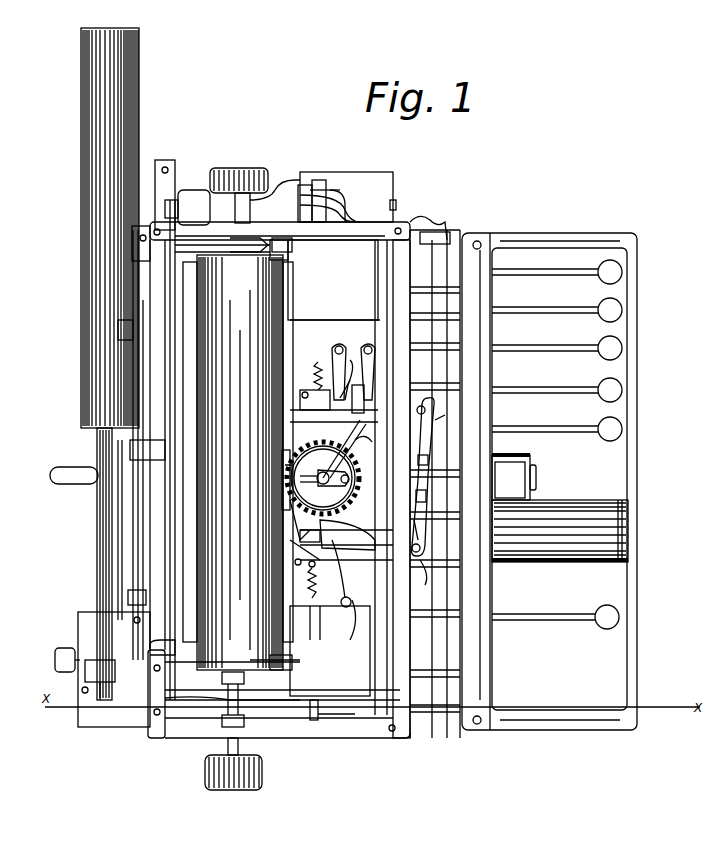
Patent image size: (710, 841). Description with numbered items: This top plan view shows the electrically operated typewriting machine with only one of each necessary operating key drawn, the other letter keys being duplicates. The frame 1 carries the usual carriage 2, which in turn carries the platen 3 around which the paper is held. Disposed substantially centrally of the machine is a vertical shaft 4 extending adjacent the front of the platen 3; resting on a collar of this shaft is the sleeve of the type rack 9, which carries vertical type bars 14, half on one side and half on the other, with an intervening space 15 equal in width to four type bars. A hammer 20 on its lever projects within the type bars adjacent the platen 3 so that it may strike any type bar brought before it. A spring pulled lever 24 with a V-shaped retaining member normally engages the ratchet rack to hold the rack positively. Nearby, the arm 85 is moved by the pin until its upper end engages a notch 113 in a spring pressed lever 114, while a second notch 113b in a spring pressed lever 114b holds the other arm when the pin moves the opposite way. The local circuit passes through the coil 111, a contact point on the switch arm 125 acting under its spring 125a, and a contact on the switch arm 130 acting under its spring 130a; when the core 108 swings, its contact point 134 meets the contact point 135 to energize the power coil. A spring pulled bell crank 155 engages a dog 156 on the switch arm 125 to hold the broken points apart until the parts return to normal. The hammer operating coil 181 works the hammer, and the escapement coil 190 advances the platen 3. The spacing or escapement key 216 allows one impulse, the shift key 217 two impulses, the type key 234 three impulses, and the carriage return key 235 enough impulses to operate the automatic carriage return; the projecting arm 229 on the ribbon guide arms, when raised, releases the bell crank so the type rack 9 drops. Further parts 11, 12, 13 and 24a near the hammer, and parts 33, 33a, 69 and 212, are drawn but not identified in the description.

The frame 1 is at (438, 718).
The carriage 2 is at (212, 700).
The platen 3 is at (215, 552).
The vertical shaft 4 is at (322, 452).
The type rack 9 is at (352, 497).
The pawl 11 is at (316, 485).
The cam plate 12 is at (336, 484).
The pin 13 is at (350, 477).
The vertical type bars 14 is at (340, 440).
The intervening space 15 is at (294, 458).
The hammer 20 is at (322, 472).
The spring pulled lever 24 is at (366, 380).
The bracket lug 24a is at (372, 442).
The key 33 is at (619, 617).
The key 33a is at (622, 390).
The switch box 69 is at (520, 470).
The arm 85 is at (415, 527).
The core 108 is at (304, 190).
The coil 111 is at (366, 182).
The notch 113 is at (426, 494).
The notch 113b is at (428, 460).
The spring pressed lever 114 is at (421, 560).
The spring pressed lever 114b is at (430, 440).
The switch arm 125 is at (334, 364).
The spring 125a is at (352, 358).
The switch arm 130 is at (340, 588).
The spring 130a is at (352, 625).
The contact point 134 is at (321, 185).
The contact point 135 is at (338, 188).
The spring pulled bell crank 155 is at (314, 372).
The dog 156 is at (352, 381).
The hammer operating coil 181 is at (122, 527).
The escapement coil 190 is at (555, 512).
The spring 212 is at (305, 568).
The spacing or escapement key 216 is at (622, 429).
The shift key 217 is at (622, 272).
The projecting arm 229 is at (310, 391).
The type key 234 is at (622, 310).
The carriage return key 235 is at (622, 348).